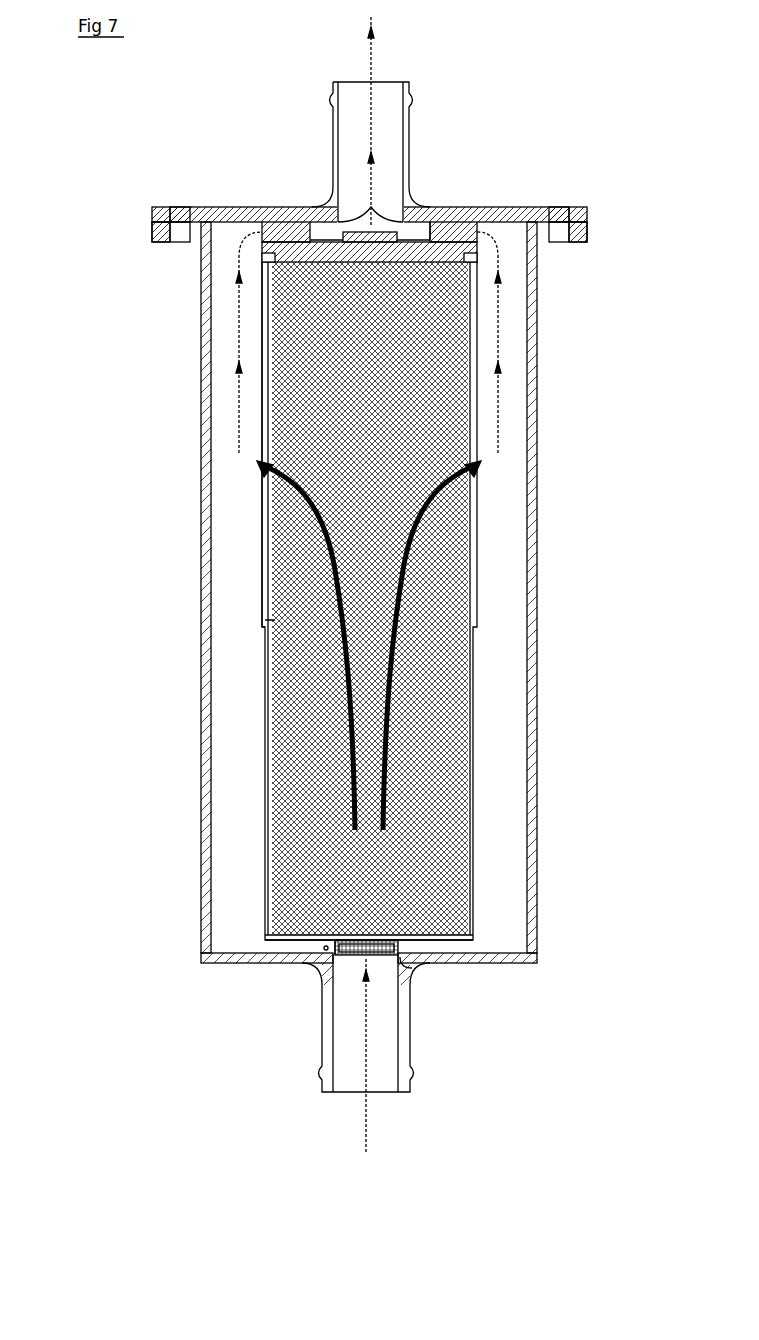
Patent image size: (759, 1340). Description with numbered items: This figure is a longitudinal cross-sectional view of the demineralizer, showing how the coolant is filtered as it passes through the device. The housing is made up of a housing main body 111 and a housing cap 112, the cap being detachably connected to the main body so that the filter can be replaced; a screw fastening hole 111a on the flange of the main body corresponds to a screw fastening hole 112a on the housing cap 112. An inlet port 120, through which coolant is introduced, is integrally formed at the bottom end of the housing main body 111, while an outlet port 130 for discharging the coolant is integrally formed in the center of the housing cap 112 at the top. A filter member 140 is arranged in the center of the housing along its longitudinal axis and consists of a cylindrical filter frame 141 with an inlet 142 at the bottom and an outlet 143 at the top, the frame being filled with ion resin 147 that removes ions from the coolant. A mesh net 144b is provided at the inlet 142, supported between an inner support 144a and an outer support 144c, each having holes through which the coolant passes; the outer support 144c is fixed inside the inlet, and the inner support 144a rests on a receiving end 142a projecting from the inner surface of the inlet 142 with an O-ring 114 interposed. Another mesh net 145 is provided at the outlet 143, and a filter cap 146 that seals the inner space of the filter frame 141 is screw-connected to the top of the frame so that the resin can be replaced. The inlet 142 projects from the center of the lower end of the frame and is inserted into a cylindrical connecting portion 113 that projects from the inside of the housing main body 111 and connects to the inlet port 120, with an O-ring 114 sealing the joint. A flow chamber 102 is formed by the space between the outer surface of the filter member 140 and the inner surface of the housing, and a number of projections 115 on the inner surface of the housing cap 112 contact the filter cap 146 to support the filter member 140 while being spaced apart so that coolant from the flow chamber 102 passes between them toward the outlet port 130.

The flow chamber 102 is at (497, 752).
The housing main body 111 is at (211, 400).
The screw fastening hole 111a is at (175, 243).
The housing cap 112 is at (258, 212).
The screw fastening hole 112a is at (173, 208).
The connecting portion 113 is at (318, 948).
The O-ring 114 is at (322, 955).
The projections 115 is at (466, 234).
The inlet port 120 is at (322, 1055).
The outlet port 130 is at (410, 135).
The filter member 140 is at (377, 657).
The filter frame 141 is at (268, 740).
The inlet 142 is at (412, 965).
The receiving end 142a is at (333, 935).
The outlet 143 is at (260, 507).
The inner support 144a is at (415, 930).
The mesh net 144b is at (425, 948).
The outer support 144c is at (408, 963).
The mesh net 145 is at (265, 582).
The filter cap 146 is at (373, 240).
The ion resin 147 is at (470, 533).